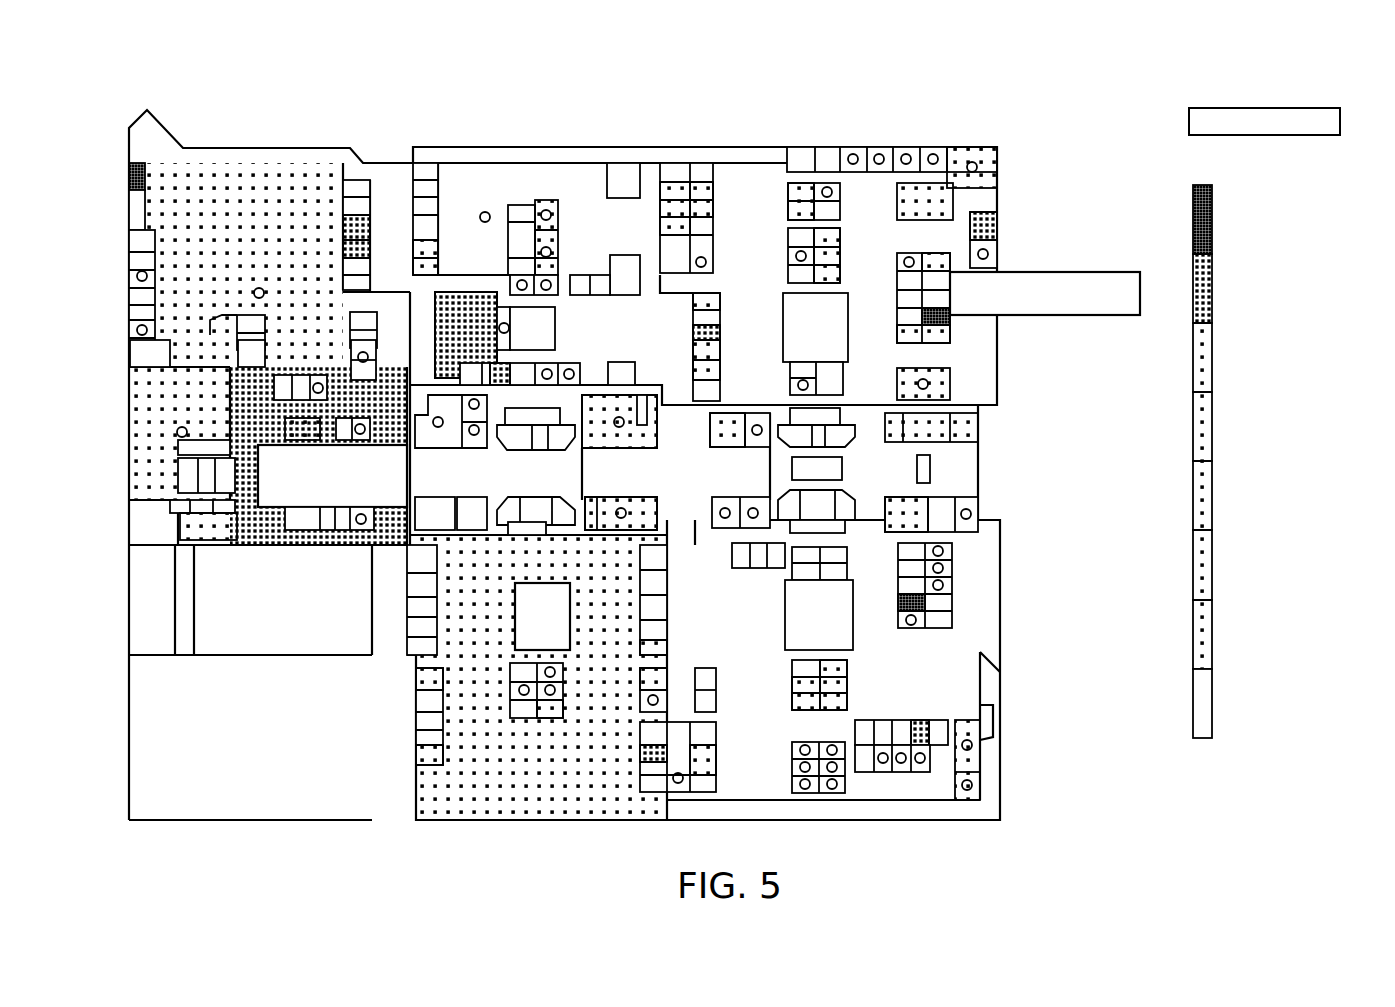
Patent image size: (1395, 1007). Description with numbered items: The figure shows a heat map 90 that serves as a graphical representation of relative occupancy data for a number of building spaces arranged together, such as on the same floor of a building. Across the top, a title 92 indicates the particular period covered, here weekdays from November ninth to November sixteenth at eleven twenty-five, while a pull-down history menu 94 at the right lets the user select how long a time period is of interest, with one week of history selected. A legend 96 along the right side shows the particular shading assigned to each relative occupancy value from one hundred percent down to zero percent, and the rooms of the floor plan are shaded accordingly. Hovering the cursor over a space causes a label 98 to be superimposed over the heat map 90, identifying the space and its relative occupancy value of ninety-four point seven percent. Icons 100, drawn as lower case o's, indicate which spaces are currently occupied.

The heat map 90 is at (1070, 44).
The title 92 is at (772, 66).
The pull-down history menu 94 is at (1299, 76).
The legend 96 is at (1270, 185).
The label 98 is at (1062, 316).
The icons 100 is at (485, 212).